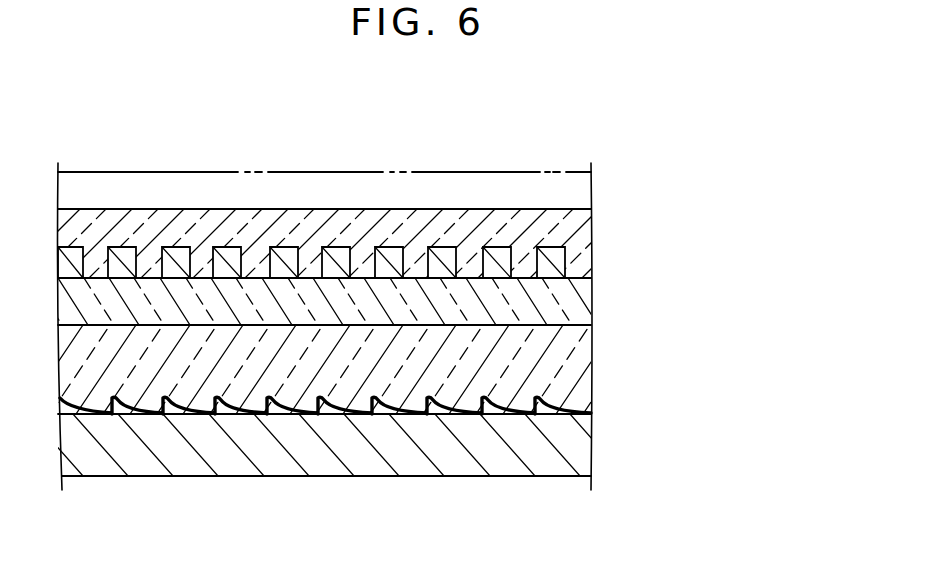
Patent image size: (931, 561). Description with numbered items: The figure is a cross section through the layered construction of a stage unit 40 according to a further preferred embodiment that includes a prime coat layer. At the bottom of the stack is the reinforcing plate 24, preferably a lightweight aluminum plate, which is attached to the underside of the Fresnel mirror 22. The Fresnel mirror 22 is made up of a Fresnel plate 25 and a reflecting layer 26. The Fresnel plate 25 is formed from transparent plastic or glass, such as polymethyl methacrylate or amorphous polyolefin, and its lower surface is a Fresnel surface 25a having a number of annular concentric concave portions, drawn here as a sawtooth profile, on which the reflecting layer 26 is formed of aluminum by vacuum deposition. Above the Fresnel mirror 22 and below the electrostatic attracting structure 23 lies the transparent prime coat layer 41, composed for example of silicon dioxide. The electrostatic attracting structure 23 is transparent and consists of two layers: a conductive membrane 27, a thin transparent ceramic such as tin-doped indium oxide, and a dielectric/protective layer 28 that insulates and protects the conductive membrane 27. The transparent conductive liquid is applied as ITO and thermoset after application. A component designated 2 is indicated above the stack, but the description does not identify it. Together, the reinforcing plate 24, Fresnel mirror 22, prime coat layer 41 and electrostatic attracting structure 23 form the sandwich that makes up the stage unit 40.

The optical disk 2 is at (202, 173).
The dielectric/protective layer 28 is at (578, 229).
The conductive membrane 27 is at (556, 262).
The prime coat layer 41 is at (578, 302).
The Fresnel plate 25 is at (582, 355).
The reflecting layer 26 is at (543, 413).
The reinforcing plate 24 is at (580, 450).
The Fresnel surface 25a is at (230, 418).
The electrostatic attracting structure 23 is at (717, 200).
The Fresnel mirror 22 is at (717, 323).
The stage unit 40 is at (777, 475).